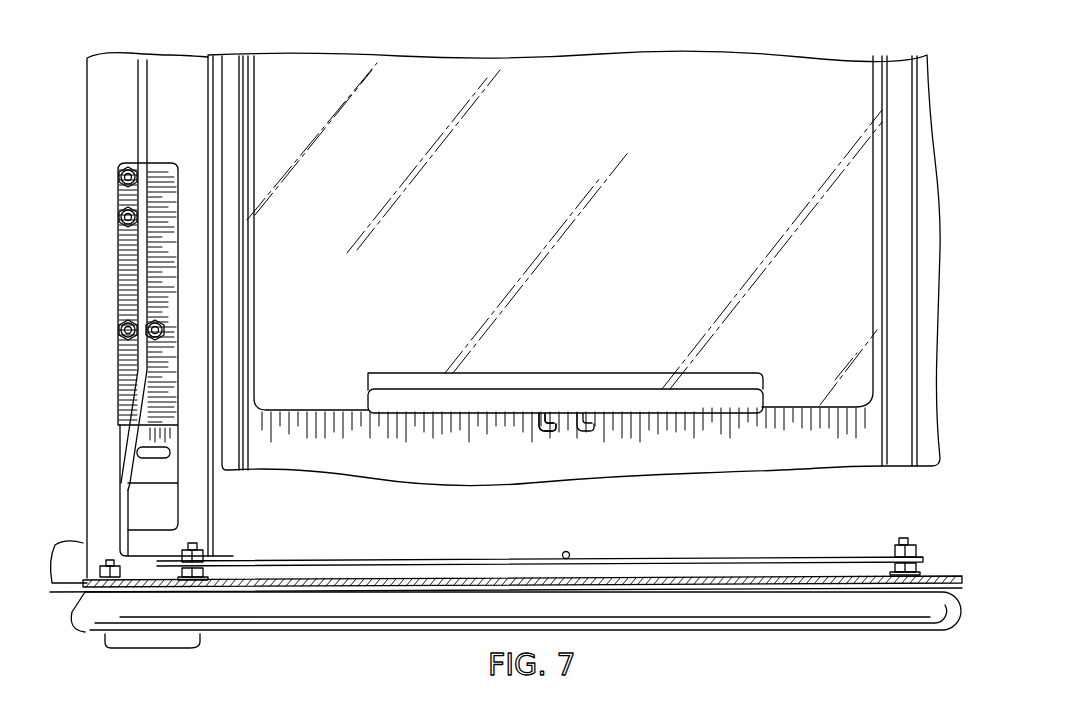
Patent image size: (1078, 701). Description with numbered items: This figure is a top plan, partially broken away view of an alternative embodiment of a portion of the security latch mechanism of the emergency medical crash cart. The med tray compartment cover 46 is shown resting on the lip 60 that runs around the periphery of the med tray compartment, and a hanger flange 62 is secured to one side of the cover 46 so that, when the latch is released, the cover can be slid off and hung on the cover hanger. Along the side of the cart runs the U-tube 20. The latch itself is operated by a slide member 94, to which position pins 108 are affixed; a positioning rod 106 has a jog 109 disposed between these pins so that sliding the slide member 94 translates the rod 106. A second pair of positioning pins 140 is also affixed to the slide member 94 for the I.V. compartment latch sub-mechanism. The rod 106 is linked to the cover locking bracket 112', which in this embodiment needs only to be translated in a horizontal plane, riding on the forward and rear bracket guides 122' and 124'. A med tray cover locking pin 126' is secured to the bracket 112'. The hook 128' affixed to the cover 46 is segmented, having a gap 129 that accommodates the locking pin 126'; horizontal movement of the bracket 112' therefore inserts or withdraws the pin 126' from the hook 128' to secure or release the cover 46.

The U-tube 20 is at (802, 620).
The med tray compartment cover 46 is at (537, 201).
The lip 60 is at (248, 447).
The hanger flange 62 is at (414, 398).
The slide member 94 is at (170, 373).
The positioning rod 106 is at (140, 258).
The position pins 108 is at (155, 322).
The jog 109 is at (130, 457).
The cover locking bracket 112' is at (506, 555).
The forward bracket guide 122' is at (231, 550).
The rear bracket guide 124' is at (884, 546).
The med tray cover locking pin 126' is at (593, 535).
The hook 128' is at (570, 443).
The gap 129 is at (567, 428).
The second pair of positioning pins 140 is at (122, 218).